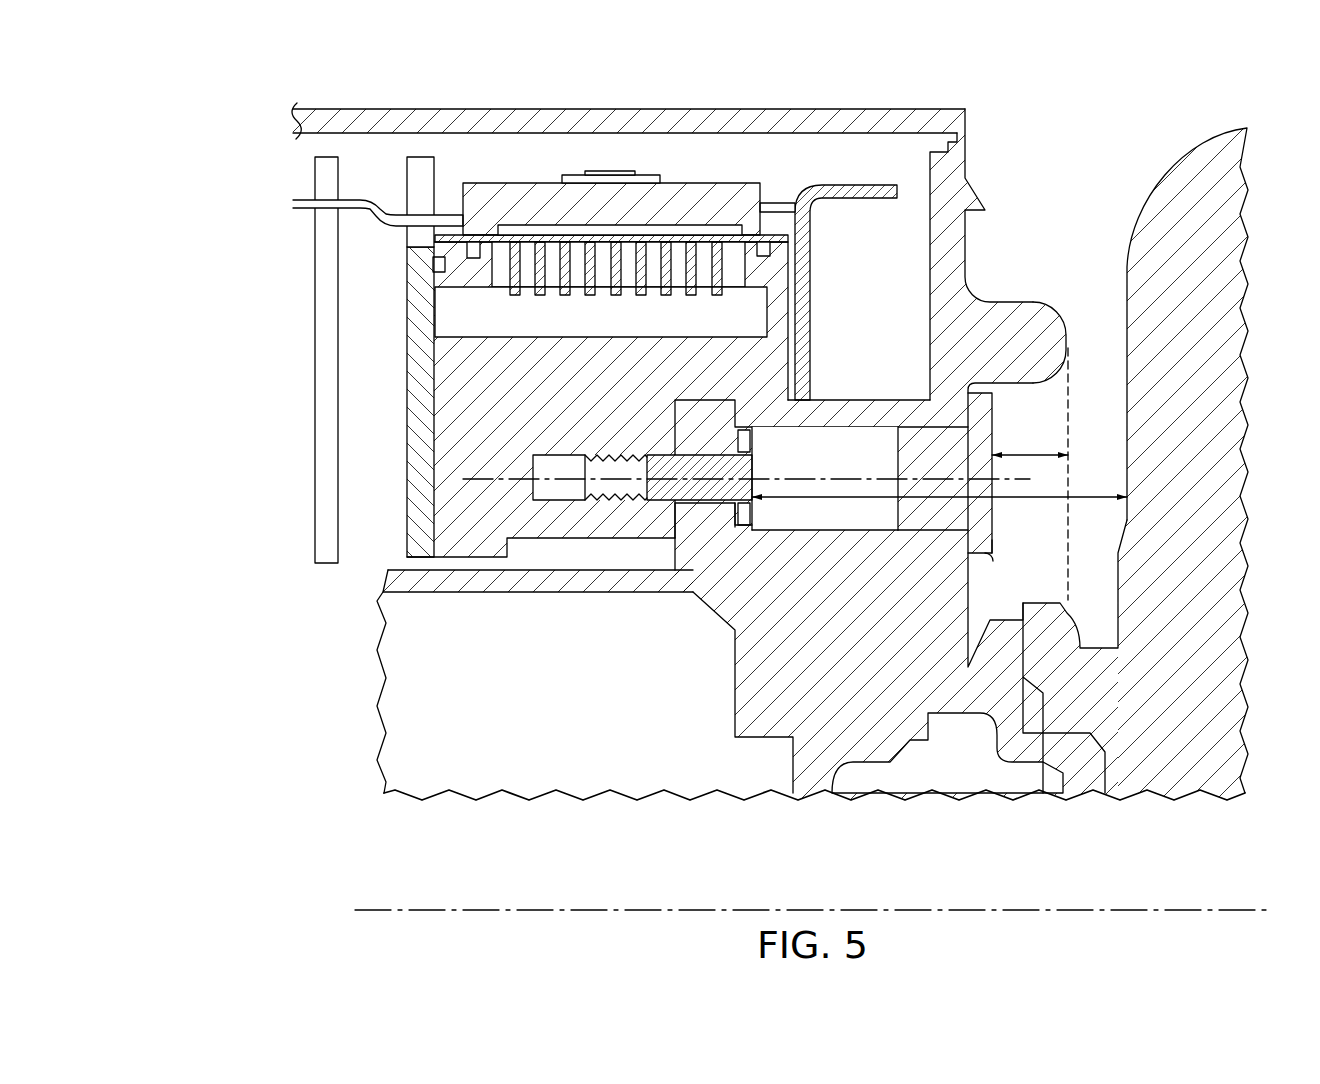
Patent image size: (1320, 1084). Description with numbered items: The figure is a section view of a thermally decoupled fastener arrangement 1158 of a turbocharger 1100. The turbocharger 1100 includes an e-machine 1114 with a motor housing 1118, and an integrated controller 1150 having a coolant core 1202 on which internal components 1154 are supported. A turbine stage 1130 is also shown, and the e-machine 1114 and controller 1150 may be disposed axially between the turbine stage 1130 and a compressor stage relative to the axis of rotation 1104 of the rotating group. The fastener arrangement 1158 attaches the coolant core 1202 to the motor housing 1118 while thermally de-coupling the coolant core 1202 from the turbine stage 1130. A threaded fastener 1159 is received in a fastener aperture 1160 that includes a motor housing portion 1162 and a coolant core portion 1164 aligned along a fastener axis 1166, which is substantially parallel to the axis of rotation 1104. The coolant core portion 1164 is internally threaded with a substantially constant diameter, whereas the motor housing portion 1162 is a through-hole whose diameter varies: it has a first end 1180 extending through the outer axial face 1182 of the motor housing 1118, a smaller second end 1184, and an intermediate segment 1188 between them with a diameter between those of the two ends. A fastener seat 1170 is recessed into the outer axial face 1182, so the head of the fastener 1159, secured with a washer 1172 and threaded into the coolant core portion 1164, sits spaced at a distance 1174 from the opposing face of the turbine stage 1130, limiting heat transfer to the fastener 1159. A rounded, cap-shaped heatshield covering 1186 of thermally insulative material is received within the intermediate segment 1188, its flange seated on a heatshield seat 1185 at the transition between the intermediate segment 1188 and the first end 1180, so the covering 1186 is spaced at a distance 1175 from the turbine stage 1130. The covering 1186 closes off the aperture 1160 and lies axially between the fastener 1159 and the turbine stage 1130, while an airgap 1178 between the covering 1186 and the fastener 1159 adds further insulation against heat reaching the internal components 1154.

The turbocharger 1100 is at (185, 130).
The axis of rotation 1104 is at (1185, 908).
The e-machine 1114 is at (400, 702).
The motor housing 1118 is at (778, 705).
The turbine stage 1130 is at (1222, 162).
The integrated controller 1150 is at (758, 172).
The internal components 1154 is at (682, 212).
The thermally decoupled fastener arrangement 1158 is at (835, 412).
The fastener 1159 is at (655, 463).
The fastener aperture 1160 is at (692, 468).
The motor housing portion 1162 is at (795, 523).
The coolant core portion 1164 is at (560, 463).
The fastener axis 1166 is at (1003, 482).
The fastener seat 1170 is at (737, 530).
The washer 1172 is at (752, 449).
The distance 1174 is at (1080, 497).
The distance 1175 is at (1018, 455).
The airgap 1178 is at (838, 470).
The first end 1180 is at (1008, 560).
The outer axial face 1182 is at (1068, 348).
The second end 1184 is at (718, 505).
The heatshield seat 1185 is at (993, 561).
The heatshield covering 1186 is at (945, 527).
The intermediate segment 1188 is at (845, 517).
The coolant core 1202 is at (530, 380).